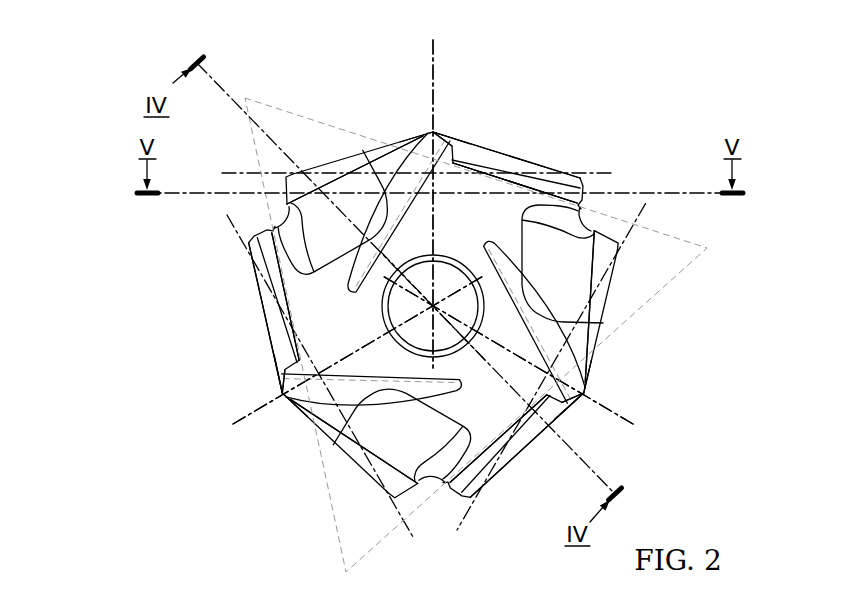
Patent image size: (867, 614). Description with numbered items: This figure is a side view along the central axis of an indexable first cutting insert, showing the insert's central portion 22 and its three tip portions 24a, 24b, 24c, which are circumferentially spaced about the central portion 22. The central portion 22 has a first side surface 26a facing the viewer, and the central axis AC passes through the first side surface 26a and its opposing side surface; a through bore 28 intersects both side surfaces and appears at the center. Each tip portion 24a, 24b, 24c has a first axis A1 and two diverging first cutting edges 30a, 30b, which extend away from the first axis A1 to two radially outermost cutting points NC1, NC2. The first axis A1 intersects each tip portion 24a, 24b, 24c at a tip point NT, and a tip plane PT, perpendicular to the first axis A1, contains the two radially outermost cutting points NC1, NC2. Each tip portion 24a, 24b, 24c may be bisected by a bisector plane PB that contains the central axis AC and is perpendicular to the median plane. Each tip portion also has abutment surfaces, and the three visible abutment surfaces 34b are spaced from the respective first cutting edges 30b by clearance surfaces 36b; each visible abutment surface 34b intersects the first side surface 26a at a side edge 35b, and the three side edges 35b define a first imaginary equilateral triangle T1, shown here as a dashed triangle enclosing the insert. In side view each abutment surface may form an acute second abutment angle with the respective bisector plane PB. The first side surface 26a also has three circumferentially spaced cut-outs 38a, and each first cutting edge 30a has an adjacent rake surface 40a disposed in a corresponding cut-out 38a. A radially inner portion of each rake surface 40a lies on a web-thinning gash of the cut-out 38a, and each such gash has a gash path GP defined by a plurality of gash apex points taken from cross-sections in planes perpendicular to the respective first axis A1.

The central portion 22 is at (458, 255).
The tip portion 24a is at (485, 163).
The tip portion 24b is at (582, 404).
The tip portion 24c is at (283, 403).
The first side surface 26a is at (313, 335).
The through bore 28 is at (446, 343).
The first cutting edge 30a is at (327, 163).
The first cutting edge 30b is at (556, 165).
The abutment surface 34b is at (503, 182).
The side edge 35b is at (527, 190).
The clearance surface 36b is at (535, 167).
The cut-out 38a is at (318, 247).
The rake surface 40a is at (383, 160).
The central axis AC is at (433, 306).
The first axis A1 is at (435, 225).
The bisector plane PB is at (433, 232).
The tip plane PT is at (434, 361).
The first imaginary equilateral triangle T1 is at (273, 103).
The gash path GP is at (427, 146).
The tip point NT is at (460, 124).
The radially outermost cutting point NC1 is at (287, 168).
The radially outermost cutting point NC2 is at (581, 176).